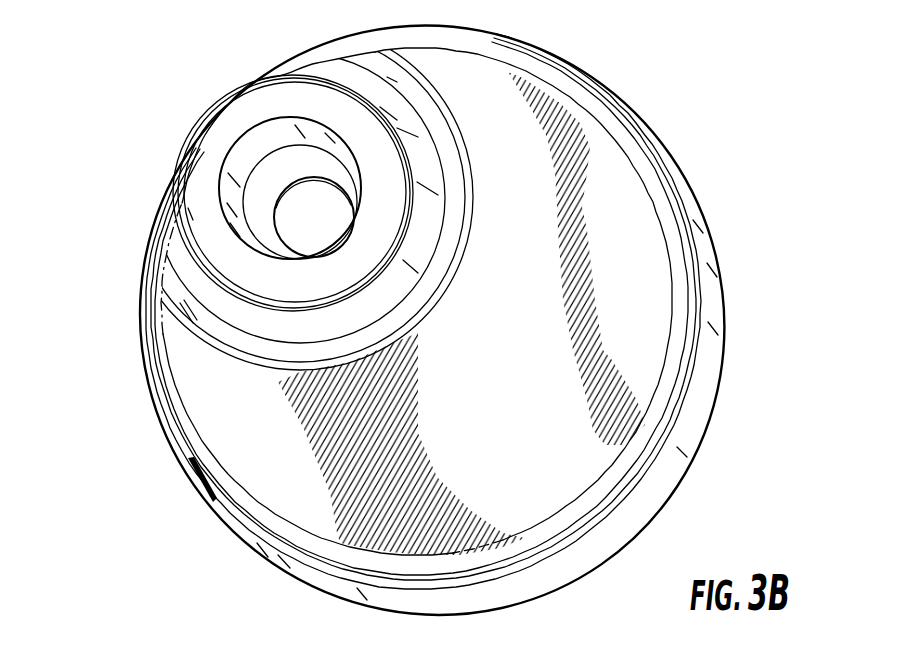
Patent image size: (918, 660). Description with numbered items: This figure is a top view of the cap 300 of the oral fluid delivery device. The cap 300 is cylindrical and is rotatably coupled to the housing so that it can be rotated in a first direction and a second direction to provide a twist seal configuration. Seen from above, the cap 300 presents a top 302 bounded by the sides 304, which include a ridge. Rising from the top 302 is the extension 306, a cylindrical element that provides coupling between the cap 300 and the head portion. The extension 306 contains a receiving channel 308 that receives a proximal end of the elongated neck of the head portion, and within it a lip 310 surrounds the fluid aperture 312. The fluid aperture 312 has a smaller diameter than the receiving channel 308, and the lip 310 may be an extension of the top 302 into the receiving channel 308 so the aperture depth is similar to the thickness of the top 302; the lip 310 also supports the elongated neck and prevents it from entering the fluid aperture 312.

The cap 300 is at (748, 243).
The top 302 is at (228, 425).
The sides 304 is at (690, 428).
The extension 306 is at (198, 240).
The receiving channel 308 is at (248, 160).
The lip 310 is at (256, 201).
The fluid aperture 312 is at (298, 223).